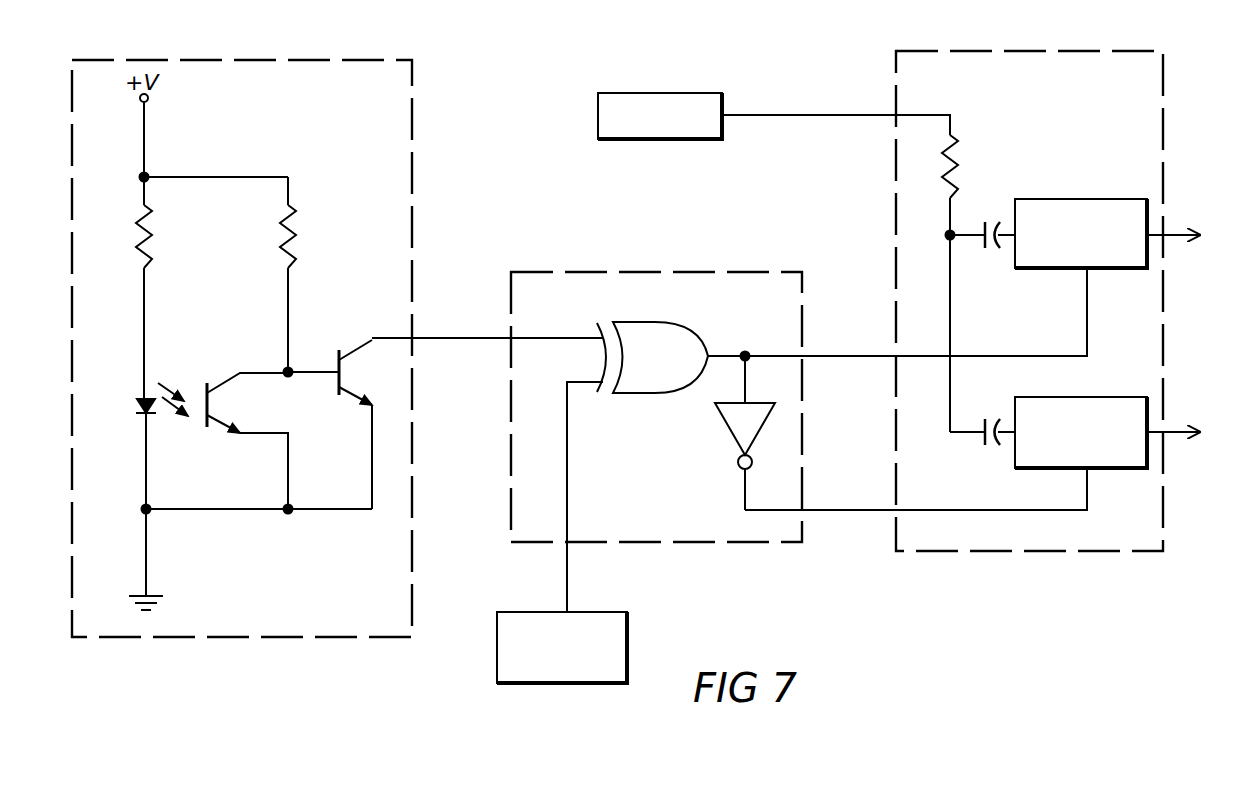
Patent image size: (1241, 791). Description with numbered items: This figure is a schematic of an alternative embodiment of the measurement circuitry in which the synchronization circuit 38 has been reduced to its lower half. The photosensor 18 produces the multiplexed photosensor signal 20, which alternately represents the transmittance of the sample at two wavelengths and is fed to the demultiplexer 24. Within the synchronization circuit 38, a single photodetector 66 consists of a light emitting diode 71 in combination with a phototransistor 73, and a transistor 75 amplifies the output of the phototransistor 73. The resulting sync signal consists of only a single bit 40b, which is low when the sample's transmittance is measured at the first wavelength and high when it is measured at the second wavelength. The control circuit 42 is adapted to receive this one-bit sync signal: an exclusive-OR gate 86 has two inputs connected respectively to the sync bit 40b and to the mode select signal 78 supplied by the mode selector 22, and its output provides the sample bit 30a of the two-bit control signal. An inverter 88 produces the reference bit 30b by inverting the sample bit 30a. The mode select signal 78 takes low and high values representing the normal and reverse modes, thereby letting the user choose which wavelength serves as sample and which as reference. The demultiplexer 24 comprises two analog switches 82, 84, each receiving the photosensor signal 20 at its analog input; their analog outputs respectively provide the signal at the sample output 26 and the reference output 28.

The photosensor 18 is at (635, 93).
The photosensor signal 20 is at (822, 115).
The mode selector 22 is at (530, 612).
The demultiplexer 24 is at (932, 51).
The sample output 26 is at (1170, 228).
The reference output 28 is at (1170, 428).
The sample bit 30a is at (820, 355).
The reference bit 30b is at (820, 510).
The synchronization circuit 38 is at (103, 60).
The sync signal bit 40b is at (430, 337).
The control circuit 42 is at (545, 272).
The photodetector 66 is at (191, 416).
The light emitting diode 71 is at (140, 400).
The phototransistor 73 is at (212, 398).
The transistor 75 is at (357, 345).
The mode select signal 78 is at (568, 577).
The analog switch 82 is at (1055, 199).
The analog switch 84 is at (1045, 397).
The exclusive-OR gate 86 is at (640, 322).
The inverter 88 is at (720, 424).